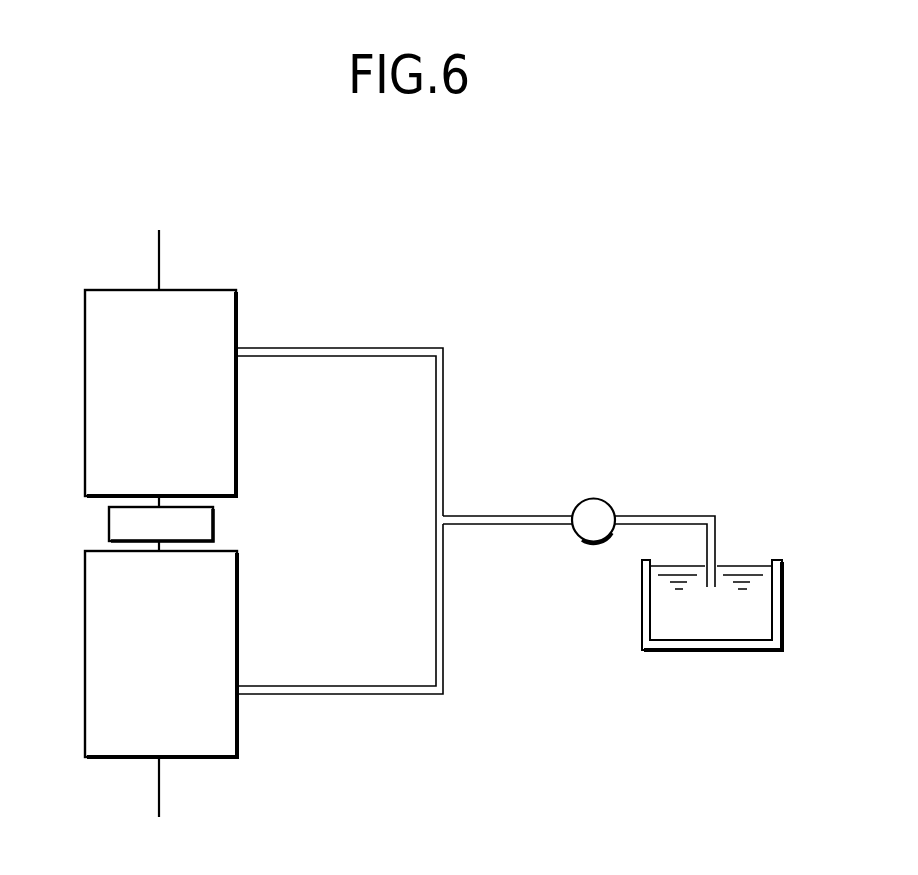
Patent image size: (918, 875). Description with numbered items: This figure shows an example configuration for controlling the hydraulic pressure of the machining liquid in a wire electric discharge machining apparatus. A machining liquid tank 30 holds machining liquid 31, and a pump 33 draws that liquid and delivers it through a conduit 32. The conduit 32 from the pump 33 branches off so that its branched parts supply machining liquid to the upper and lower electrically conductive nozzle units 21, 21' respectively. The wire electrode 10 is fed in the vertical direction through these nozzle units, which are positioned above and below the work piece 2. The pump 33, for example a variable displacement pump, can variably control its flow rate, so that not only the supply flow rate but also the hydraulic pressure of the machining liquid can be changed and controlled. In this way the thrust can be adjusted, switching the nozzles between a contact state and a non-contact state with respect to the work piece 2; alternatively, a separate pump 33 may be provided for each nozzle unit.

The wire electrode 10 is at (160, 253).
The electrically conductive nozzle unit 21 is at (124, 393).
The electrically conductive nozzle unit 21' is at (125, 654).
The work piece 2 is at (213, 519).
The conduit 32 is at (443, 405).
The pump 33 is at (595, 498).
The machining liquid tank 30 is at (782, 595).
The machining liquid 31 is at (752, 560).